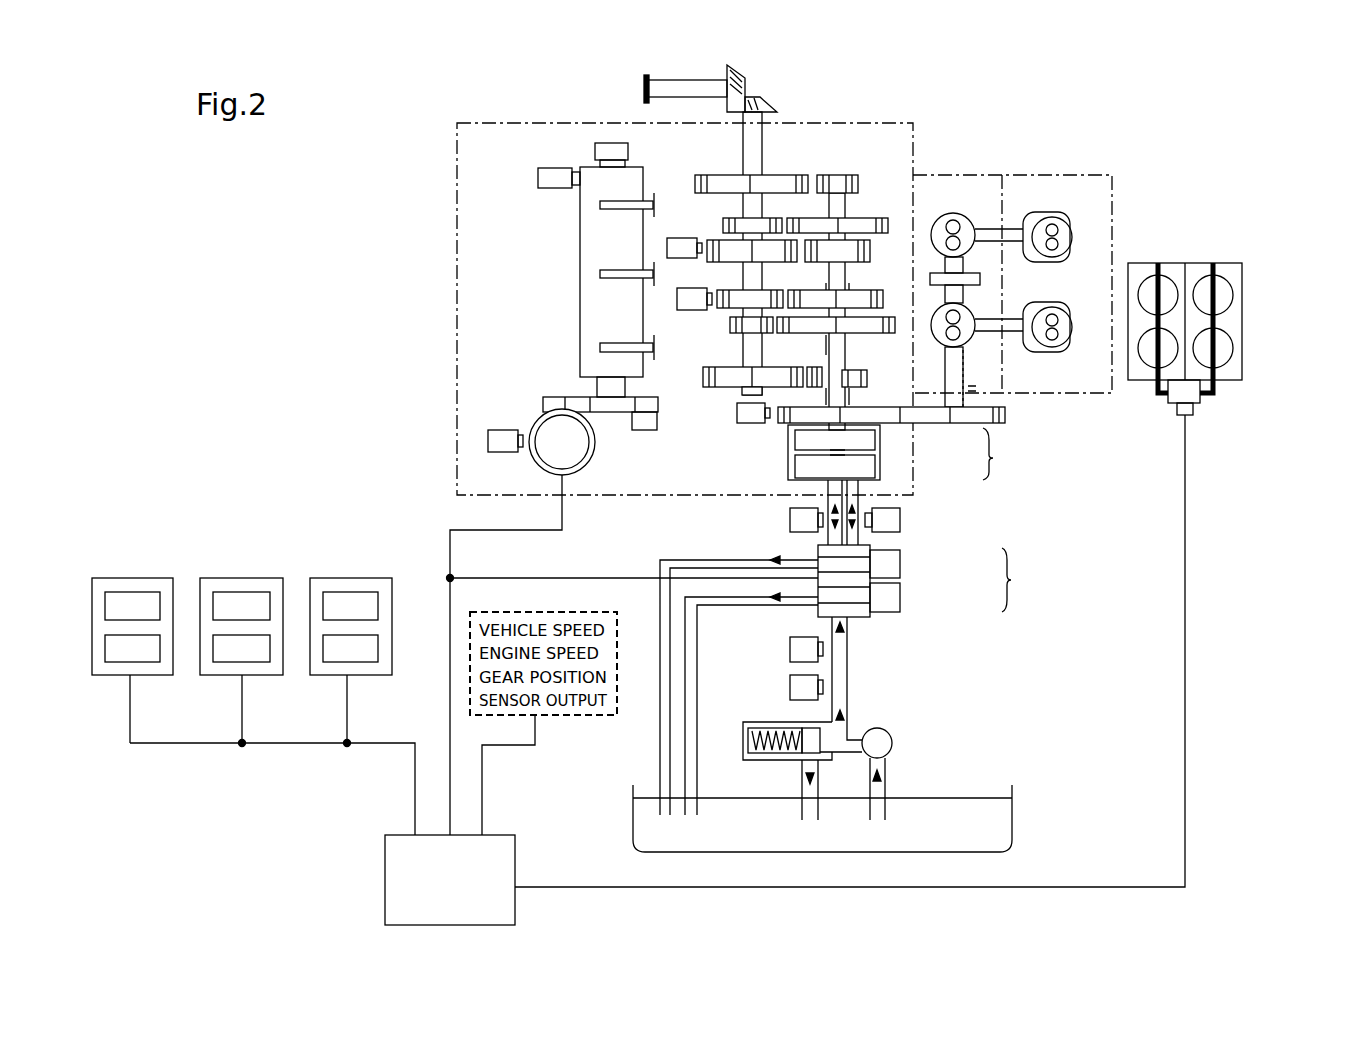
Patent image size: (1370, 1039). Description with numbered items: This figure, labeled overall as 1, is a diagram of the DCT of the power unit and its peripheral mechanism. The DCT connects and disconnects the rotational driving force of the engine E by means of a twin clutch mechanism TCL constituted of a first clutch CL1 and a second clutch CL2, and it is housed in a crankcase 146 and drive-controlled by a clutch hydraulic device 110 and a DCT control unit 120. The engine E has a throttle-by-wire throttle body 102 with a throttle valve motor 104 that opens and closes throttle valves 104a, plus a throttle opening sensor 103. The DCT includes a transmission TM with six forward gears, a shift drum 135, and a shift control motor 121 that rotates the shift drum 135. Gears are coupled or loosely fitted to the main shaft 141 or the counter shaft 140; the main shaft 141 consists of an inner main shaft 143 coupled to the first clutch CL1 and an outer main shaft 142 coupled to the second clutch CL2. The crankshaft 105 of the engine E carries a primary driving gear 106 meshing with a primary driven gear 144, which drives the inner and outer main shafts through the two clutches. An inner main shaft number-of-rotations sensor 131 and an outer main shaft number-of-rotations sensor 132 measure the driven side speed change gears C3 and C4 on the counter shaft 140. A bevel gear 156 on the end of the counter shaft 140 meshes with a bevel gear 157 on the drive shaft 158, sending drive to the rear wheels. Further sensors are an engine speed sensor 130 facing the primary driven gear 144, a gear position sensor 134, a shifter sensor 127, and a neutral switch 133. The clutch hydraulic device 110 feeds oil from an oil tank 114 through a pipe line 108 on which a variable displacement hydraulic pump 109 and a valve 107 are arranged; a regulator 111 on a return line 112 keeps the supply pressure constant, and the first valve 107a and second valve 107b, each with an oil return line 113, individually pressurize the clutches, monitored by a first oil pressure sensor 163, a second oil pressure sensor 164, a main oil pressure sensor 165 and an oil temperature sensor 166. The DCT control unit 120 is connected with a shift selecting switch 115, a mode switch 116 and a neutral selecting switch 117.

The vehicle 1 is at (455, 188).
The throttle body 102 is at (1245, 266).
The throttle opening sensor 103 is at (1195, 420).
The throttle valve motor 104 is at (1202, 395).
The throttle valves 104a is at (1231, 300).
The crankshaft 105 is at (963, 398).
The primary driving gear 106 is at (1005, 421).
The valve 107 is at (936, 581).
The first valve 107a is at (900, 560).
The second valve 107b is at (900, 590).
The pipe line 108 is at (848, 696).
The variable displacement hydraulic pump 109 is at (893, 745).
The clutch hydraulic device 110 is at (1015, 695).
The regulator 111 is at (755, 722).
The return line 112 is at (802, 780).
The oil return line 113 is at (662, 742).
The oil tank 114 is at (639, 817).
The shift selecting switch 115 is at (143, 578).
The mode switch 116 is at (260, 578).
The neutral selecting switch 117 is at (365, 578).
The DCT control unit 120 is at (502, 835).
The shift control motor 121 is at (542, 415).
The shifter sensor 127 is at (500, 453).
The engine speed sensor 130 is at (737, 413).
The inner main shaft number-of-rotations sensor 131 is at (667, 246).
The outer main shaft number-of-rotations sensor 132 is at (677, 299).
The neutral switch 133 is at (538, 178).
The gear position sensor 134 is at (595, 151).
The shift drum 135 is at (643, 182).
The counter shaft 140 is at (764, 151).
The main shaft 141 is at (849, 271).
The outer main shaft 142 is at (848, 350).
The inner main shaft 143 is at (848, 393).
The primary driven gear 144 is at (780, 426).
The crankcase 146 is at (497, 122).
The bevel gear 156 is at (770, 97).
The bevel gear 157 is at (745, 64).
The drive shaft 158 is at (690, 80).
The first oil pressure sensor 163 is at (900, 520).
The second oil pressure sensor 164 is at (790, 520).
The main oil pressure sensor 165 is at (790, 648).
The oil temperature sensor 166 is at (790, 686).
The driven side speed change gear C3 is at (717, 240).
The driven side speed change gear C4 is at (725, 308).
The first clutch CL1 is at (880, 435).
The second clutch CL2 is at (880, 465).
The twin clutch mechanism TCL is at (912, 452).
The transmission TM is at (676, 445).
The element DCT is at (872, 126).
The engine E is at (1088, 170).